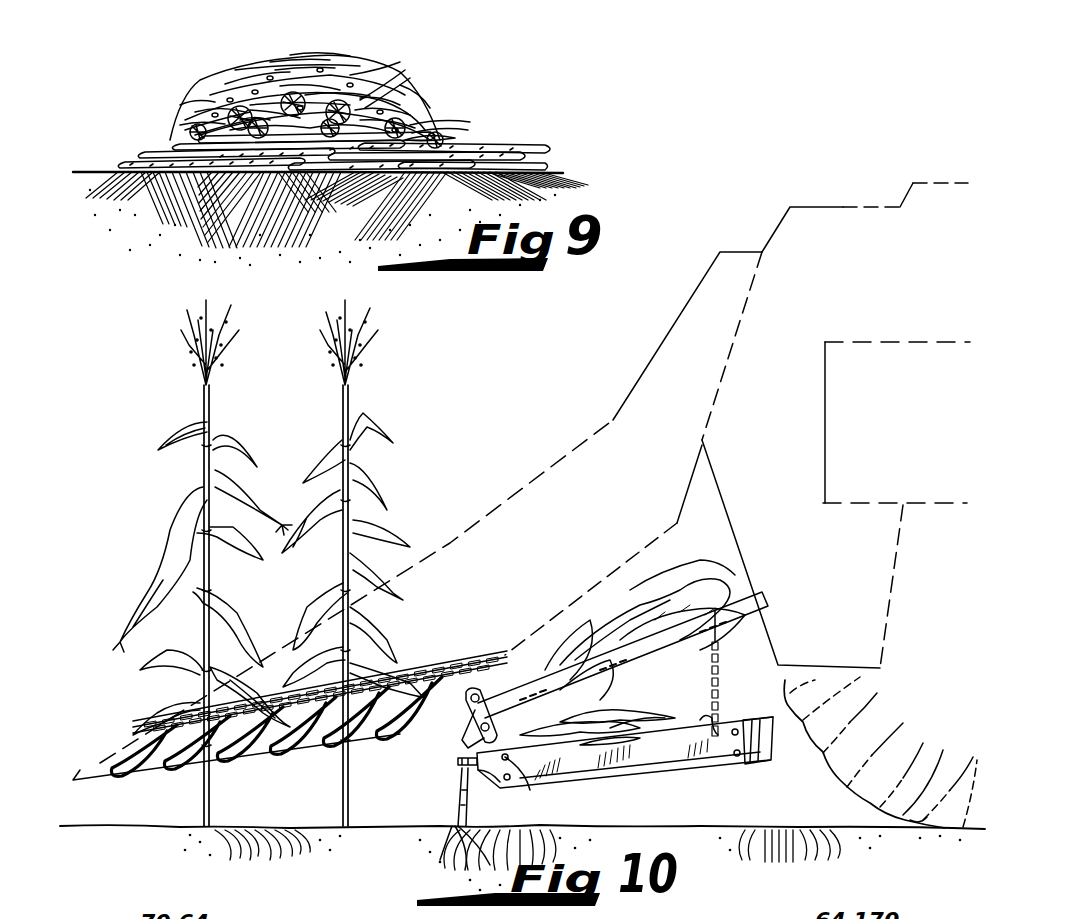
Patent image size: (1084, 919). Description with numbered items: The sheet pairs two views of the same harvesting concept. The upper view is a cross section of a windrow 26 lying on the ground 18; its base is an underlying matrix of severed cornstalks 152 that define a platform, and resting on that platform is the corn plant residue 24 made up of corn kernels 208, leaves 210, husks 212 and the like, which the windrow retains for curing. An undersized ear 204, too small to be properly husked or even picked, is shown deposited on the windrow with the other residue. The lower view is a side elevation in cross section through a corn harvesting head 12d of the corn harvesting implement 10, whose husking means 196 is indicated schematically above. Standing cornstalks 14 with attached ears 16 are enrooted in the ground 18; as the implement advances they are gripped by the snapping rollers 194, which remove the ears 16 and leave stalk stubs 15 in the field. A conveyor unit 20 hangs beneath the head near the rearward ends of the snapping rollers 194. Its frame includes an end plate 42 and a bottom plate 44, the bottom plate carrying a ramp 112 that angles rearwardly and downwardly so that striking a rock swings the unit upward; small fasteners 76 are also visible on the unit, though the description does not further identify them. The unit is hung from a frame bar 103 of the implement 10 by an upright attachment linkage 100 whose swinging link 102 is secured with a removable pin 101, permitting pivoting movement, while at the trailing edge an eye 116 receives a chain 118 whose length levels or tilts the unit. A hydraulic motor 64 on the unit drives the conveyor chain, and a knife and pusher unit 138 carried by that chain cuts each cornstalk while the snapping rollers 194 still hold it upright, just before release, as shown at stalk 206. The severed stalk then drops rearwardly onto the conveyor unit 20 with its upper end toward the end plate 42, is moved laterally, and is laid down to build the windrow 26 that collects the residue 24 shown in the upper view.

In FIG. 10, the corn harvesting implement 10 is at (626, 364).
In FIG. 10, the corn harvesting head 12d is at (510, 493).
In FIG. 10, the standing cornstalks 14 is at (342, 421).
In FIG. 10, the stalk stubs 15 is at (435, 800).
In FIG. 10, the corn ears 16 is at (256, 499).
In FIG. 9, the ground 18 is at (532, 175).
In FIG. 10, the ground 18 is at (160, 808).
In FIG. 10, the conveyor unit 20 is at (750, 716).
In FIG. 9, the corn plant residue 24 is at (234, 62).
In FIG. 9, the windrow 26 is at (362, 58).
In FIG. 10, the end plate 42 is at (690, 760).
In FIG. 10, the bottom plate 44 is at (645, 768).
In FIG. 10, the hydraulic motor 64 is at (760, 742).
In FIG. 10, the bolts 76 is at (512, 778).
In FIG. 10, the upright attachment linkage 100 is at (458, 761).
In FIG. 10, the removable pin 101 is at (473, 694).
In FIG. 10, the swinging link 102 is at (505, 718).
In FIG. 10, the frame bar 103 is at (655, 652).
In FIG. 10, the ramp 112 is at (494, 780).
In FIG. 10, the eye 116 is at (712, 718).
In FIG. 10, the chain 118 is at (722, 687).
In FIG. 10, the knife and pusher unit 138 is at (456, 764).
In FIG. 9, the cornstalks 152 is at (135, 166).
In FIG. 10, the snapping rollers 194 is at (248, 760).
In FIG. 10, the husking means 196 is at (832, 342).
In FIG. 9, the undersized ear 204 is at (188, 133).
In FIG. 10, the undersized ear 204 is at (580, 720).
In FIG. 10, the stalk 206 is at (690, 582).
In FIG. 9, the corn kernels 208 is at (370, 95).
In FIG. 9, the leaves 210 is at (200, 108).
In FIG. 9, the husks 212 is at (305, 62).